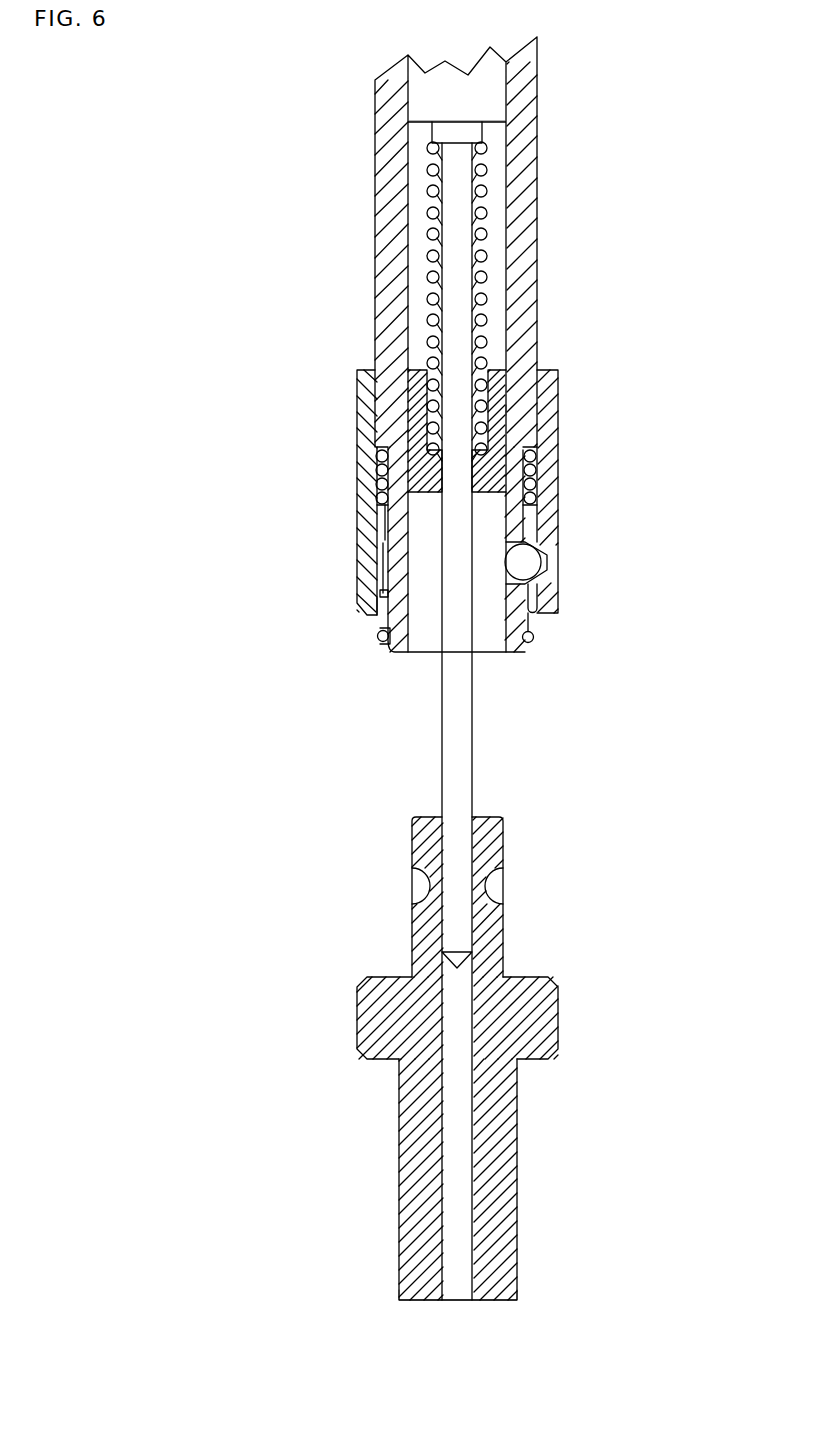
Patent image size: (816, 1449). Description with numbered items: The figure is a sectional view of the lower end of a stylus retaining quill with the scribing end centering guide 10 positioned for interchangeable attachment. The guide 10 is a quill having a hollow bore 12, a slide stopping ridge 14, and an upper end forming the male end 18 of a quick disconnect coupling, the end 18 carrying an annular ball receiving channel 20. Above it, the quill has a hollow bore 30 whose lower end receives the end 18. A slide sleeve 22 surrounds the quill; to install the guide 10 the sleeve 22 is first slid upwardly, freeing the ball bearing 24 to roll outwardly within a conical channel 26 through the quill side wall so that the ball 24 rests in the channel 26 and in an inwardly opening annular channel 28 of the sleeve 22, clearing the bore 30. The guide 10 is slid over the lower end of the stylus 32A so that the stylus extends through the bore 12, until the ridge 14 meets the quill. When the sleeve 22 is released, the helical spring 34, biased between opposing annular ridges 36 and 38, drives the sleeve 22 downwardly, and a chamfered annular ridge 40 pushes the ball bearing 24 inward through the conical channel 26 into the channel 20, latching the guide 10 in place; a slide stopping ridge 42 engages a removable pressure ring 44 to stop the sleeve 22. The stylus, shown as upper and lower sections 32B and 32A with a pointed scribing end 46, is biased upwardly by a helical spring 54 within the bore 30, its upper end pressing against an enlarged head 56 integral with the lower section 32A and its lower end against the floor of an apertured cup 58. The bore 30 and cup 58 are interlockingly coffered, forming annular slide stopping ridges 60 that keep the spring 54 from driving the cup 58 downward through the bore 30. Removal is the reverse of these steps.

The scribing end centering guide 10 is at (369, 1174).
The hollow bore 12 is at (458, 1143).
The slide stopping ridge 14 is at (540, 1030).
The male end of quick disconnect coupling 18 is at (432, 848).
The annular ball receiving channel 20 is at (492, 892).
The slide sleeve 22 is at (548, 384).
The ball bearing 24 is at (528, 566).
The conical channel 26 is at (535, 640).
The inwardly opening annular channel 28 is at (380, 565).
The hollow bore 30 is at (500, 270).
The lower stylus section 32A is at (458, 238).
The upper stylus section 32B is at (450, 102).
The helical spring 34 is at (533, 477).
The annular ridge 36 is at (378, 448).
The annular ridge 38 is at (378, 522).
The chamfered annular ridge 40 is at (542, 535).
The slide stopping ridge 42 is at (375, 598).
The removable pressure ring 44 is at (380, 640).
The pointed scribing end 46 is at (458, 960).
The helical spring 54 is at (493, 208).
The enlarged head 56 is at (467, 133).
The apertured cup 58 is at (422, 398).
The annular slide stopping ridges 60 is at (503, 410).